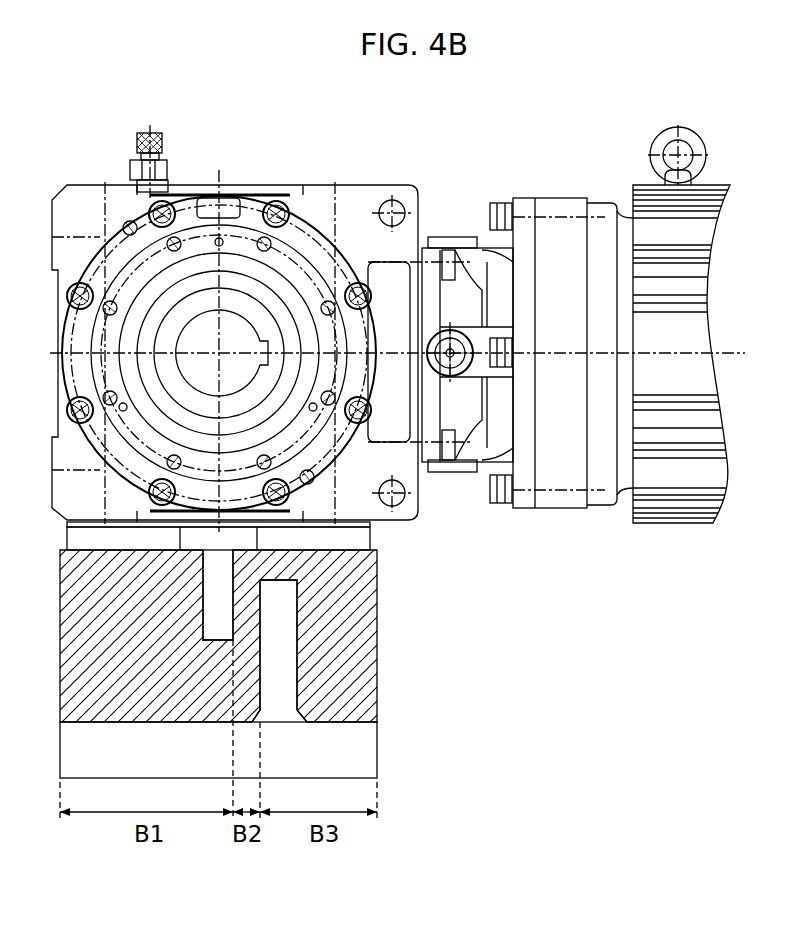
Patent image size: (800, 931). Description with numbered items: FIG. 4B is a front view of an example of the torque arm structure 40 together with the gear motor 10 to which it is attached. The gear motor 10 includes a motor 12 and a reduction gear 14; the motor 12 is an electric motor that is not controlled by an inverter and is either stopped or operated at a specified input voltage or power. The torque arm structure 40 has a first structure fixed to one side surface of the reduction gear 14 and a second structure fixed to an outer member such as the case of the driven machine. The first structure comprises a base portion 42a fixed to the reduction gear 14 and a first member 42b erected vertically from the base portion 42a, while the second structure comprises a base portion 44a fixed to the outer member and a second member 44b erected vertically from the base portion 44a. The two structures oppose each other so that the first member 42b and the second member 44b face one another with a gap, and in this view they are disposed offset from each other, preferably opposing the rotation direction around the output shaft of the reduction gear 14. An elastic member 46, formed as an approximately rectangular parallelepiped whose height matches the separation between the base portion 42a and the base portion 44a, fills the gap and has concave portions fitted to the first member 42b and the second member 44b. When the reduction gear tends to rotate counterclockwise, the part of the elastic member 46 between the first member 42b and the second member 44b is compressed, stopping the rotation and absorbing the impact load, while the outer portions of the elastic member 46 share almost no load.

The gear motor 10 is at (547, 121).
The motor 12 is at (650, 202).
The reduction gear 14 is at (397, 175).
The torque arm structure 40 is at (505, 530).
The base portion 42a is at (357, 538).
The first member 42b is at (220, 597).
The base portion 44a is at (353, 755).
The second member 44b is at (280, 618).
The elastic member 46 is at (343, 678).